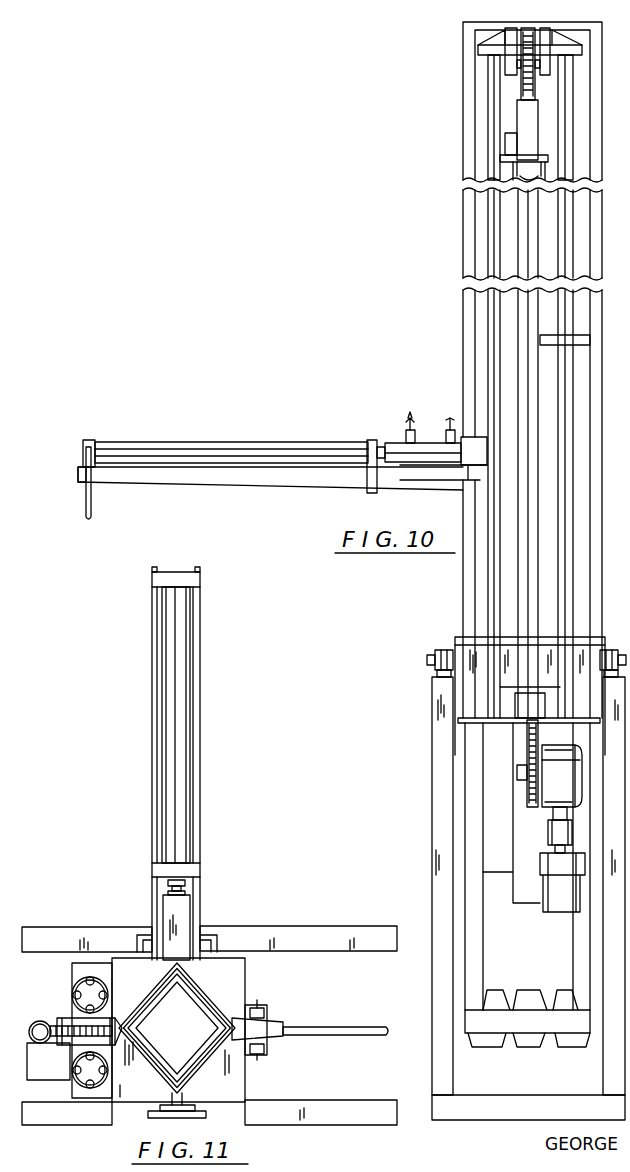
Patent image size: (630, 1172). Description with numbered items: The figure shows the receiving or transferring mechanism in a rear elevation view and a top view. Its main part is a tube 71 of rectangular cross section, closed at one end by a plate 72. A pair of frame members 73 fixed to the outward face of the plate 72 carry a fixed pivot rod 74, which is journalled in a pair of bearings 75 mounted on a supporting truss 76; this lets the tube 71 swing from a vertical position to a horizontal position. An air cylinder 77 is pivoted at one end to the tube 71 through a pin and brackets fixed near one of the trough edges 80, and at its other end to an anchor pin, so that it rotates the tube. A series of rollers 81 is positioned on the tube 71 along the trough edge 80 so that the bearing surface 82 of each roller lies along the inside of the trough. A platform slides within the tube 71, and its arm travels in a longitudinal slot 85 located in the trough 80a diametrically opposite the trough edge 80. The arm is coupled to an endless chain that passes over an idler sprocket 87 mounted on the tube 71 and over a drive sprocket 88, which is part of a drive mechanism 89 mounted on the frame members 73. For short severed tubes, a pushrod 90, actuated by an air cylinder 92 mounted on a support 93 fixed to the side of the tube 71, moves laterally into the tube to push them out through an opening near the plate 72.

In FIG. 10, the tube 71 is at (463, 233).
In FIG. 11, the tube 71 is at (240, 1072).
In FIG. 10, the plate 72 is at (458, 637).
In FIG. 10, the frame members 73 is at (570, 947).
In FIG. 10, the fixed pivot rod 74 is at (427, 660).
In FIG. 10, the bearings 75 is at (443, 650).
In FIG. 10, the supporting truss 76 is at (600, 1060).
In FIG. 11, the supporting truss 76 is at (333, 927).
In FIG. 11, the air cylinder 77 is at (385, 1027).
In FIG. 11, the trough edge 80 is at (267, 1027).
In FIG. 11, the trough 80a is at (135, 1015).
In FIG. 11, the rollers 81 is at (237, 1005).
In FIG. 11, the bearing surface 82 is at (212, 1028).
In FIG. 11, the longitudinal slot 85 is at (135, 1028).
In FIG. 10, the idler sprocket 87 is at (487, 40).
In FIG. 11, the idler sprocket 87 is at (57, 1022).
In FIG. 10, the drive sprocket 88 is at (527, 790).
In FIG. 10, the drive mechanism 89 is at (558, 785).
In FIG. 11, the drive mechanism 89 is at (45, 1068).
In FIG. 10, the pushrod 90 is at (420, 440).
In FIG. 11, the pushrod 90 is at (185, 908).
In FIG. 10, the air cylinder 92 is at (248, 442).
In FIG. 11, the air cylinder 92 is at (175, 708).
In FIG. 10, the support 93 is at (250, 477).
In FIG. 11, the support 93 is at (200, 792).